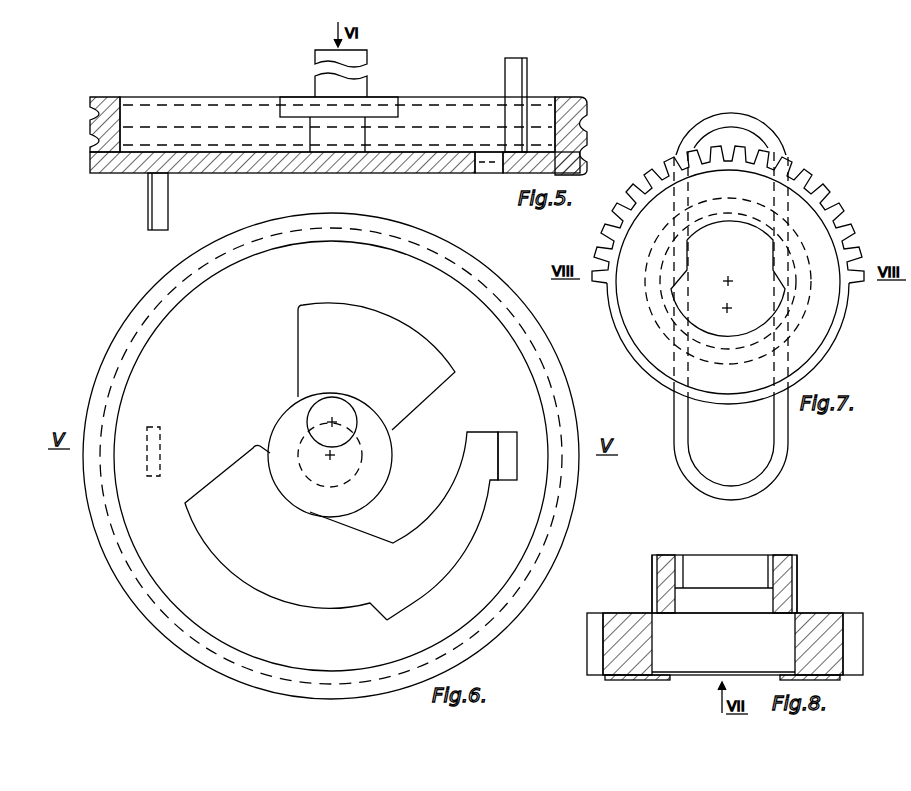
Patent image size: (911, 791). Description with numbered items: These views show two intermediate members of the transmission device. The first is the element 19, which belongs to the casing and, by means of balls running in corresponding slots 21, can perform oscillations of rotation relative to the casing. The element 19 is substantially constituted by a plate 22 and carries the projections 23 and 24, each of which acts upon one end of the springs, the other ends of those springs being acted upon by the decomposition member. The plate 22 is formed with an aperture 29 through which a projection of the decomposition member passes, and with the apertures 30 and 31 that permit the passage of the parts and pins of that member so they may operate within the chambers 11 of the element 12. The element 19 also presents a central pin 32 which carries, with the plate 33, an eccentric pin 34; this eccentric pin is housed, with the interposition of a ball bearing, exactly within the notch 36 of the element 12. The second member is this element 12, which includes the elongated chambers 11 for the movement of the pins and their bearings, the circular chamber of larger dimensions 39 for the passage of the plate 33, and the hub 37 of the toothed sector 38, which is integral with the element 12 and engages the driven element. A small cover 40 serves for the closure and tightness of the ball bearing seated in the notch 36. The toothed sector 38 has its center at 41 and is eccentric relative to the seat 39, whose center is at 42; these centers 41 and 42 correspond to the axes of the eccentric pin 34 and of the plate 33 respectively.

In FIG. 7, the elongated chamber 11 is at (753, 143).
In FIG. 8, the elongated chamber 11 is at (702, 563).
In FIG. 7, the element 12 is at (745, 122).
In FIG. 8, the element 12 is at (662, 575).
In FIG. 5, the element 19 is at (452, 103).
In FIG. 6, the element 19 is at (527, 533).
In FIG. 5, the slot 21 is at (92, 149).
In FIG. 5, the plate 22 is at (407, 174).
In FIG. 5, the projection 23 is at (518, 67).
In FIG. 6, the projection 23 is at (517, 475).
In FIG. 5, the projection 24 is at (163, 208).
In FIG. 6, the projection 24 is at (160, 448).
In FIG. 5, the aperture 29 is at (485, 174).
In FIG. 6, the aperture 29 is at (487, 433).
In FIG. 6, the aperture 30 is at (443, 357).
In FIG. 6, the aperture 31 is at (262, 585).
In FIG. 5, the central pin 32 is at (367, 134).
In FIG. 6, the central pin 32 is at (353, 475).
In FIG. 5, the plate 33 is at (383, 101).
In FIG. 6, the plate 33 is at (373, 497).
In FIG. 5, the eccentric pin 34 is at (367, 57).
In FIG. 6, the eccentric pin 34 is at (307, 413).
In FIG. 7, the notch 36 is at (718, 346).
In FIG. 8, the notch 36 is at (650, 653).
In FIG. 7, the hub 37 is at (823, 355).
In FIG. 7, the toothed sector 38 is at (813, 180).
In FIG. 8, the toothed sector 38 is at (850, 620).
In FIG. 7, the circular chamber 39 is at (673, 287).
In FIG. 8, the circular chamber 39 is at (678, 558).
In FIG. 7, the small cover 40 is at (630, 341).
In FIG. 8, the small cover 40 is at (623, 680).
In FIG. 6, the center 41 is at (334, 420).
In FIG. 7, the center 41 is at (726, 279).
In FIG. 6, the center 42 is at (330, 455).
In FIG. 7, the center 42 is at (730, 308).